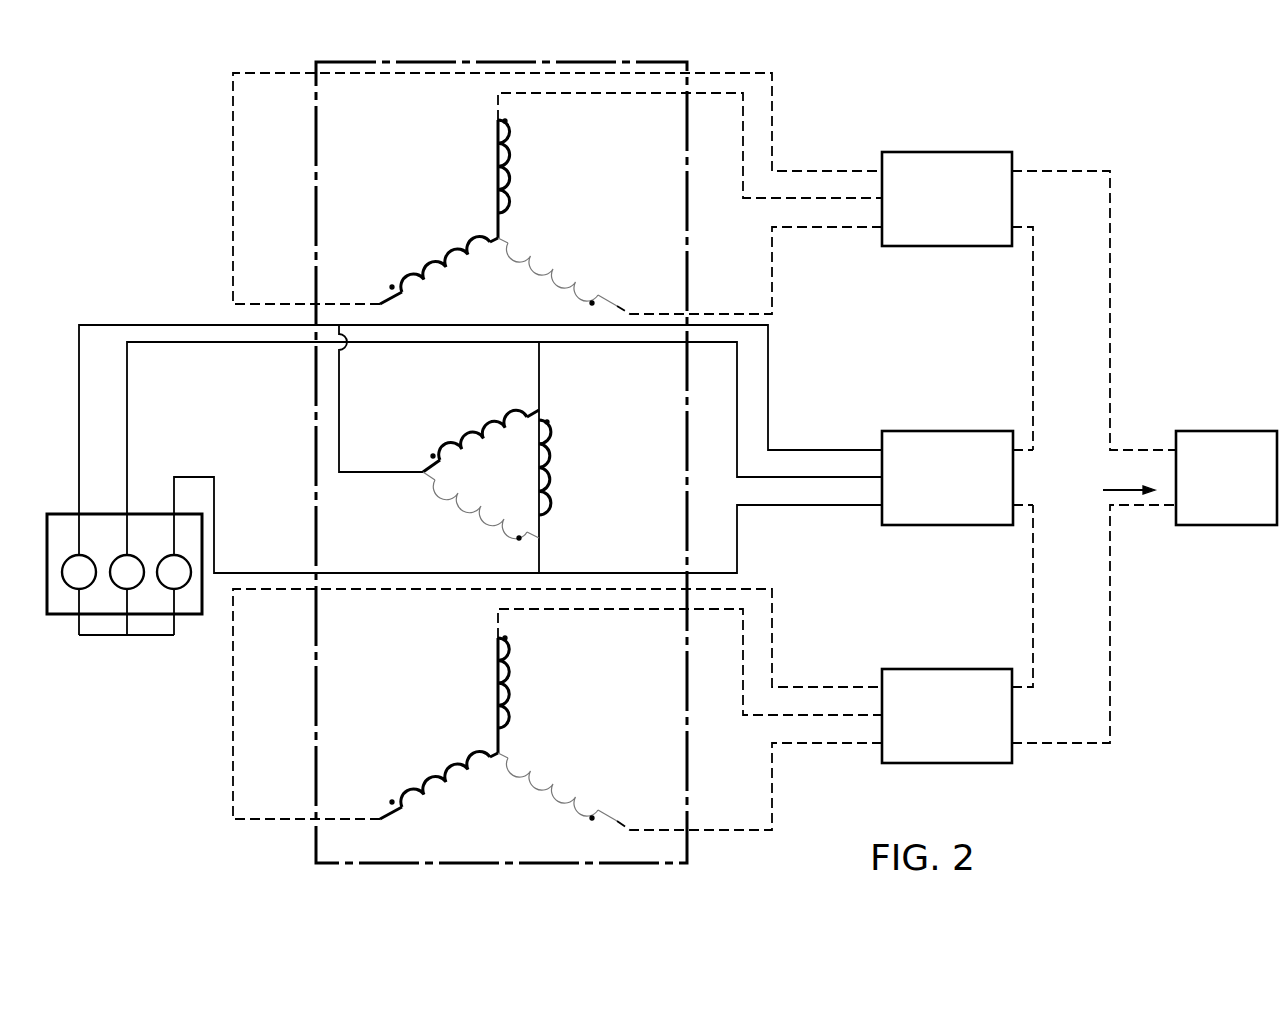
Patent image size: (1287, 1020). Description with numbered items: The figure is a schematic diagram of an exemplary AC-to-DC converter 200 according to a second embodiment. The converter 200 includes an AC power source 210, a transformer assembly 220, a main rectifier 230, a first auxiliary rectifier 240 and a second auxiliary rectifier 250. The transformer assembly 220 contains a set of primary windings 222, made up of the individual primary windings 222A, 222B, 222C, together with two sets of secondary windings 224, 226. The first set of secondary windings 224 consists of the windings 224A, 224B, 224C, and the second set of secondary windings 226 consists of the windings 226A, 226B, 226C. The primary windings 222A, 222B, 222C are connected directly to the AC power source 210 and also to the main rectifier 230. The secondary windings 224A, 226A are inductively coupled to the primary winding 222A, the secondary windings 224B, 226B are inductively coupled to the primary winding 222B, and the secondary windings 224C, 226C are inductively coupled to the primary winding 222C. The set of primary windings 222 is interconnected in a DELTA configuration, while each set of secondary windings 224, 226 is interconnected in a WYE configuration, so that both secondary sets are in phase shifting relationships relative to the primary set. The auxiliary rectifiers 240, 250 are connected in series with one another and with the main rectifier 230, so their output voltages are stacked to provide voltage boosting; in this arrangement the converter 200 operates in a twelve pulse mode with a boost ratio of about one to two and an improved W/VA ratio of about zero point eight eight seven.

The AC-to-DC converter 200 is at (652, 462).
The AC power source 210 is at (65, 614).
The transformer assembly 220 is at (316, 110).
The set of primary windings 222 is at (517, 457).
The primary winding 222A is at (550, 503).
The primary winding 222B is at (447, 498).
The primary winding 222C is at (443, 445).
The set of secondary windings 224 is at (492, 200).
The secondary winding 224A is at (517, 150).
The secondary winding 224B is at (543, 277).
The secondary winding 224C is at (443, 250).
The set of secondary windings 226 is at (492, 717).
The secondary winding 226A is at (517, 667).
The secondary winding 226B is at (543, 792).
The secondary winding 226C is at (443, 765).
The main rectifier 230 is at (940, 431).
The first auxiliary rectifier 240 is at (945, 152).
The second auxiliary rectifier 250 is at (938, 669).